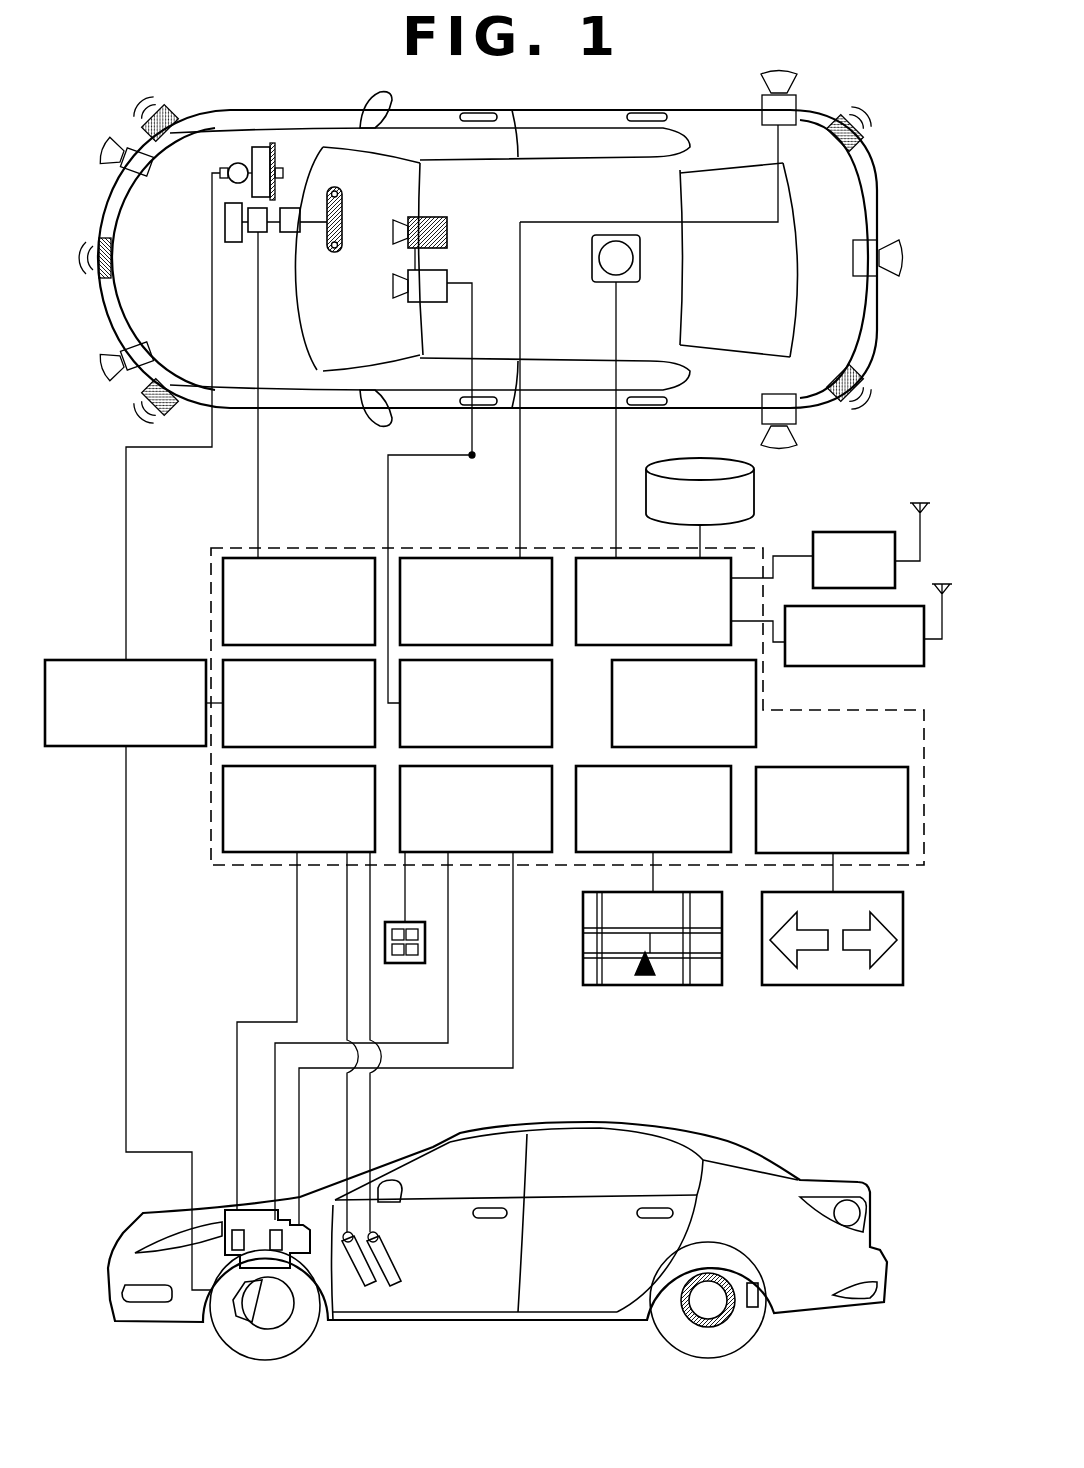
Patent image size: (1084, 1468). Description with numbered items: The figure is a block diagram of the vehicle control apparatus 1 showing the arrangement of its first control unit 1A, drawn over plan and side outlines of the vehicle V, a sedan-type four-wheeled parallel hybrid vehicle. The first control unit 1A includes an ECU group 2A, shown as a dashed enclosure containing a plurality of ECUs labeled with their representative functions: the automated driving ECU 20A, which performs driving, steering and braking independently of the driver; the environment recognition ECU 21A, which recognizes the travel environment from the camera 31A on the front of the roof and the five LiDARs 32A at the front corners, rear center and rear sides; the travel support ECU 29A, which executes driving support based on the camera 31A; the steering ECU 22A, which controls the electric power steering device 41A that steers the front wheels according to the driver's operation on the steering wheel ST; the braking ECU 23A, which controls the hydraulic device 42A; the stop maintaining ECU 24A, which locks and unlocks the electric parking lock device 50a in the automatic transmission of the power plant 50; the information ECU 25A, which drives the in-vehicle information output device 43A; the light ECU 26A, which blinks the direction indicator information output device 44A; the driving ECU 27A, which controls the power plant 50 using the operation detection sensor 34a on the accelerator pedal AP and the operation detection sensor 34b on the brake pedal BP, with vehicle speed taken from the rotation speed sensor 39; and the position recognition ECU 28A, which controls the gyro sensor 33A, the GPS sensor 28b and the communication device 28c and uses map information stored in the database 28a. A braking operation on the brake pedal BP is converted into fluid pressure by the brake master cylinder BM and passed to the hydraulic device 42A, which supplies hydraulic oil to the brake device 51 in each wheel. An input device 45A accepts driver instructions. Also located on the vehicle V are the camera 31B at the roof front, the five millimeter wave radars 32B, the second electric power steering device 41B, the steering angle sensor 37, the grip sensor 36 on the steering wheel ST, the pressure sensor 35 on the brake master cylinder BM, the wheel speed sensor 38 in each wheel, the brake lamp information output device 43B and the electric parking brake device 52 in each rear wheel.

The vehicle control apparatus 1 is at (888, 405).
The first control unit 1A is at (874, 497).
The ECU group 2A is at (345, 547).
The automated driving ECU 20A is at (763, 690).
The environment recognition ECU 21A is at (540, 557).
The steering ECU 22A is at (297, 557).
The braking ECU 23A is at (235, 748).
The stop maintaining ECU 24A is at (265, 855).
The information ECU 25A is at (590, 855).
The light ECU 26A is at (868, 767).
The driving ECU 27A is at (488, 855).
The position recognition ECU 28A is at (735, 553).
The database 28a is at (690, 460).
The GPS sensor 28b is at (845, 531).
The communication device 28c is at (868, 666).
The travel support ECU 29A is at (552, 710).
The camera 31A is at (410, 303).
The camera 31B is at (447, 226).
The LiDAR 32A is at (140, 190).
The millimeter wave radar 32B is at (183, 110).
The gyro sensor 33A is at (600, 287).
The operation detection sensor 34a is at (345, 1232).
The operation detection sensor 34b is at (382, 1240).
The pressure sensor 35 is at (262, 147).
The grip sensor 36 is at (345, 215).
The steering angle sensor 37 is at (235, 243).
The wheel speed sensor 38 is at (752, 1308).
The rotation speed sensor 39 is at (272, 1228).
The electric power steering device 41A is at (262, 233).
The electric power steering device 41B is at (291, 207).
The hydraulic device 42A is at (95, 659).
The information output device 43A is at (680, 985).
The information output device 43B is at (845, 1200).
The information output device 44A is at (843, 985).
The input device 45A is at (410, 963).
The power plant 50 is at (310, 1325).
The electric parking lock device 50a is at (232, 1222).
The brake device 51 is at (242, 1320).
The electric parking brake device 52 is at (697, 1327).
The accelerator pedal AP is at (374, 1290).
The brake pedal BP is at (399, 1290).
The brake master cylinder BM is at (240, 163).
The steering wheel ST is at (340, 187).
The vehicle V is at (893, 158).